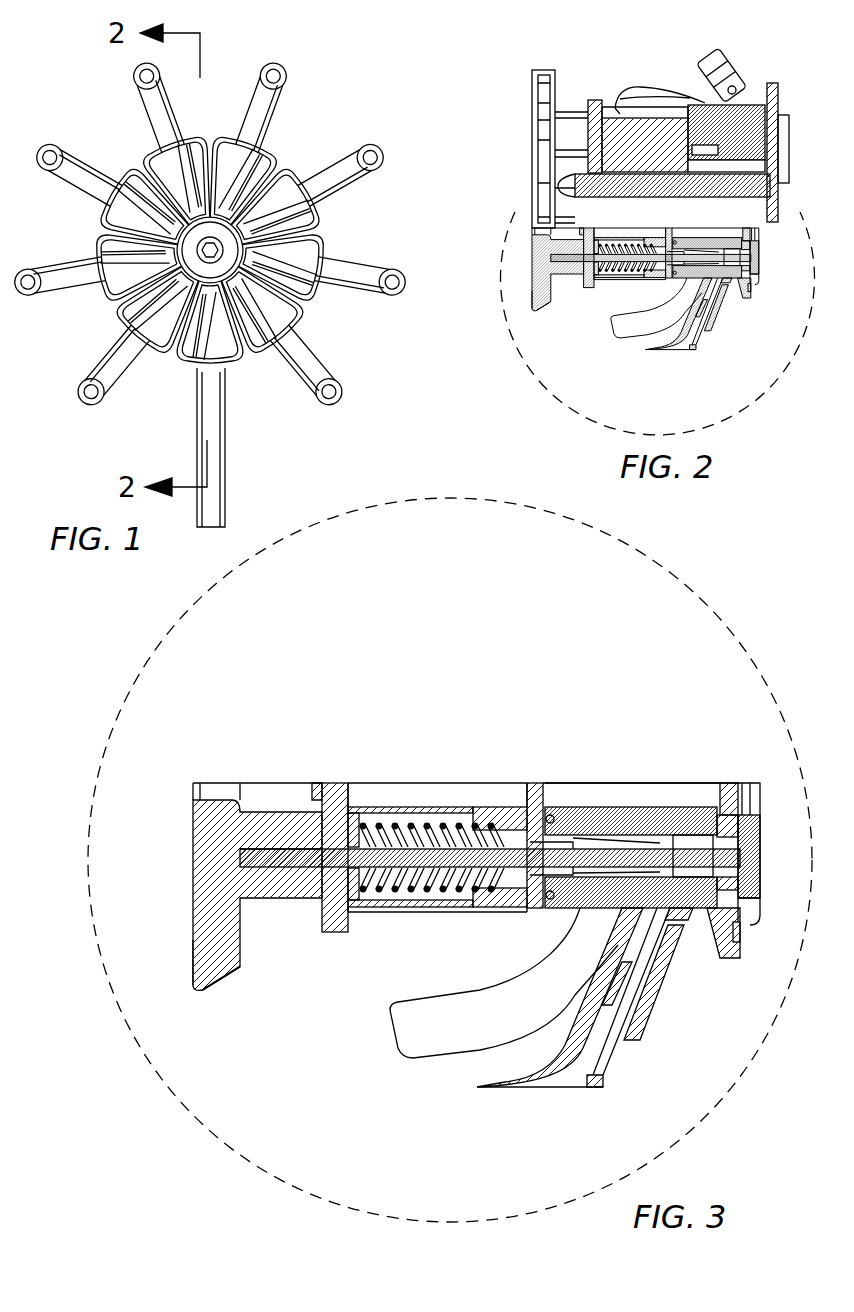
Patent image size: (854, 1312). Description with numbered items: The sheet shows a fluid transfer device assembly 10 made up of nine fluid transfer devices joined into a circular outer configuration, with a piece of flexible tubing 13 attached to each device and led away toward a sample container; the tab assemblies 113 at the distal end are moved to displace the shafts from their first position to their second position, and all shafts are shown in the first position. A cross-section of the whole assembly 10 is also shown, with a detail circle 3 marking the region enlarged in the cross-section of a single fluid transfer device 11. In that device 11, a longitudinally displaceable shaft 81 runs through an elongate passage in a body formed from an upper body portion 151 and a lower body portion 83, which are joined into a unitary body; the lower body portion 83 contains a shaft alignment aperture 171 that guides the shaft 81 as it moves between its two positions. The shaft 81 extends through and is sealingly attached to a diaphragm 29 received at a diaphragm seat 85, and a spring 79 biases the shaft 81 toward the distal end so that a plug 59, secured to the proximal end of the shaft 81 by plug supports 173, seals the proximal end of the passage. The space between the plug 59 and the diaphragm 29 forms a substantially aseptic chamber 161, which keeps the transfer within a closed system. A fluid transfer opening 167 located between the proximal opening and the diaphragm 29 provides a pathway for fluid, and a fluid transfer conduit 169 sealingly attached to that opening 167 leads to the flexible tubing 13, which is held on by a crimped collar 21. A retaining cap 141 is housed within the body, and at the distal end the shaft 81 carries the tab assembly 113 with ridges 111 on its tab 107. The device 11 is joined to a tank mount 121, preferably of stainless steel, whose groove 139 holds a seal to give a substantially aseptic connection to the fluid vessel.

In FIG. 1, the fluid transfer device assembly 10 is at (322, 108).
In FIG. 1, the flexible tubing 13 is at (97, 167).
In FIG. 3, the flexible tubing 13 is at (605, 1086).
In FIG. 1, the tab assembly 113 is at (262, 402).
In FIG. 3, the tab assembly 113 is at (252, 1020).
In FIG. 2, the detail view circle 3 is at (527, 372).
In FIG. 3, the fluid transfer device 11 is at (580, 693).
In FIG. 3, the substantially aseptic chamber 161 is at (695, 808).
In FIG. 3, the fluid transfer opening 167 is at (673, 815).
In FIG. 3, the shaft alignment aperture 171 is at (607, 818).
In FIG. 3, the plug 59 is at (748, 783).
In FIG. 3, the diaphragm 29 is at (553, 848).
In FIG. 3, the longitudinally displaceable shaft 81 is at (300, 848).
In FIG. 3, the spring 79 is at (392, 822).
In FIG. 3, the tab 107 is at (206, 850).
In FIG. 3, the ridges 111 is at (192, 963).
In FIG. 3, the retaining cap 141 is at (334, 932).
In FIG. 3, the upper body portion 151 is at (405, 912).
In FIG. 3, the diaphragm seat 85 is at (538, 908).
In FIG. 3, the lower body portion 83 is at (580, 908).
In FIG. 3, the fluid transfer conduit 169 is at (527, 988).
In FIG. 3, the crimped collar 21 is at (665, 980).
In FIG. 3, the tank mount 121 is at (660, 960).
In FIG. 3, the groove 139 is at (738, 945).
In FIG. 3, the plug supports 173 is at (744, 905).